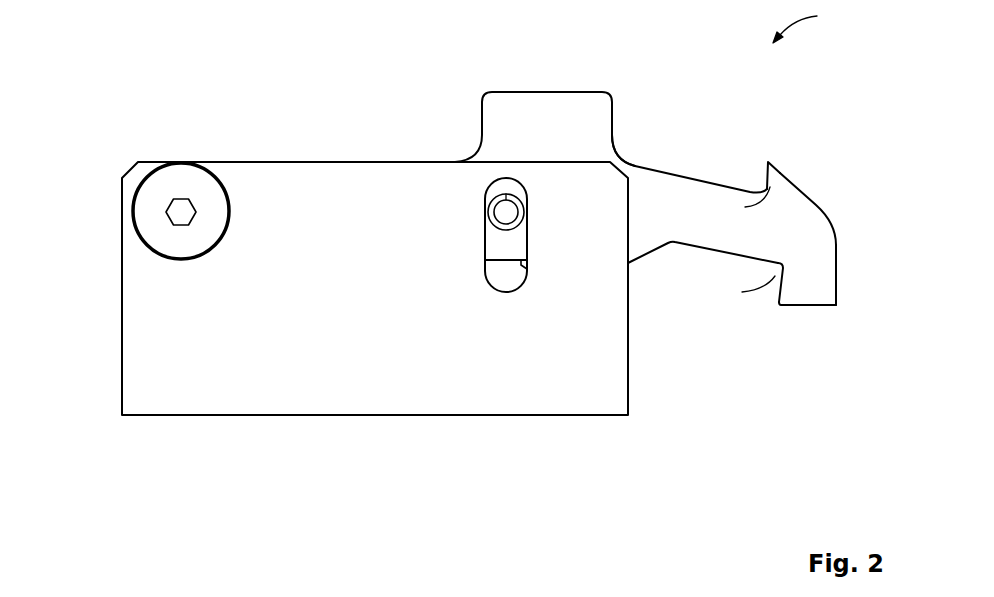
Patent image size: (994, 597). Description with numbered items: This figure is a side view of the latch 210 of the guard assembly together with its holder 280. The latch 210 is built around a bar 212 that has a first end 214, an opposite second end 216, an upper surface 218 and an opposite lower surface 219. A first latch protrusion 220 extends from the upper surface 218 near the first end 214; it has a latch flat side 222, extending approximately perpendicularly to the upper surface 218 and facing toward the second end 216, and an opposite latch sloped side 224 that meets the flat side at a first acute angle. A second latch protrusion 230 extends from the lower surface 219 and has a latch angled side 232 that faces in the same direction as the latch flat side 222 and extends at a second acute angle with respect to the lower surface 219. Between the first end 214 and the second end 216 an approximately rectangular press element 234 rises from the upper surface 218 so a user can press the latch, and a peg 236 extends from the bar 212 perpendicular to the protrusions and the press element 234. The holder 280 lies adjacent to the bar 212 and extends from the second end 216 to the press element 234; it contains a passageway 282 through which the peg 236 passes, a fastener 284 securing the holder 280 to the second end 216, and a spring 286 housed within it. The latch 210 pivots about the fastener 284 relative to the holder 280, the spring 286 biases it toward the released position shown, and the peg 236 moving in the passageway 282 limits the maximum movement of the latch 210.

The latch 210 is at (839, 68).
The bar 212 is at (692, 193).
The first end 214 is at (827, 247).
The second end 216 is at (182, 154).
The upper surface 218 is at (637, 163).
The lower surface 219 is at (702, 248).
The first latch protrusion 220 is at (817, 149).
The latch flat side 222 is at (788, 160).
The latch sloped side 224 is at (820, 208).
The second latch protrusion 230 is at (823, 315).
The latch angled side 232 is at (778, 289).
The press element 234 is at (537, 102).
The peg 236 is at (493, 217).
The holder 280 is at (112, 400).
The passageway 282 is at (500, 282).
The fastener 284 is at (147, 215).
The spring 286 is at (527, 268).